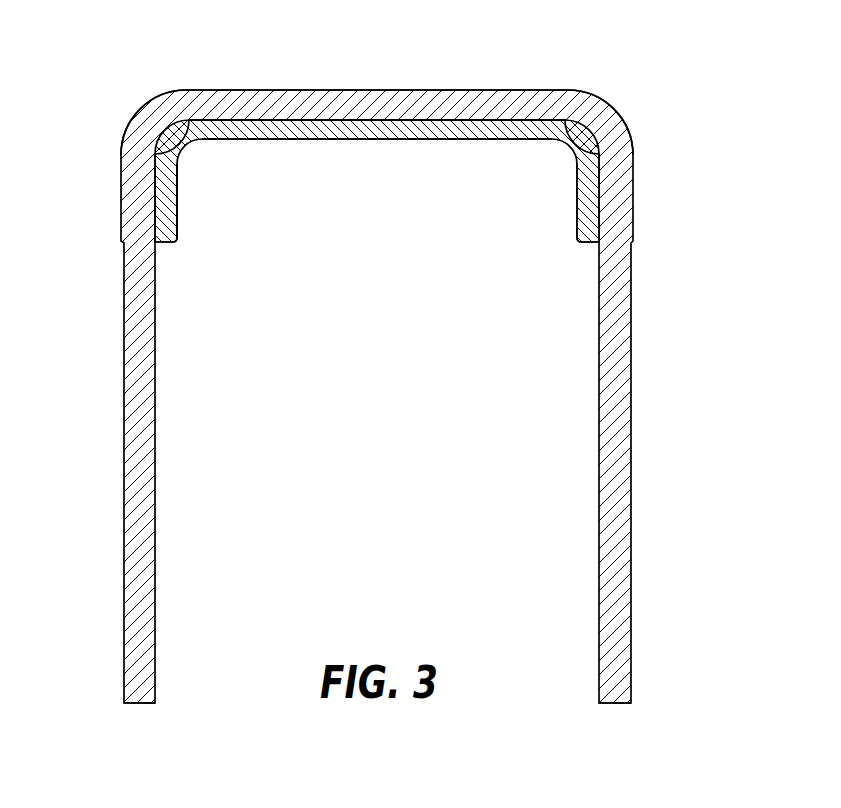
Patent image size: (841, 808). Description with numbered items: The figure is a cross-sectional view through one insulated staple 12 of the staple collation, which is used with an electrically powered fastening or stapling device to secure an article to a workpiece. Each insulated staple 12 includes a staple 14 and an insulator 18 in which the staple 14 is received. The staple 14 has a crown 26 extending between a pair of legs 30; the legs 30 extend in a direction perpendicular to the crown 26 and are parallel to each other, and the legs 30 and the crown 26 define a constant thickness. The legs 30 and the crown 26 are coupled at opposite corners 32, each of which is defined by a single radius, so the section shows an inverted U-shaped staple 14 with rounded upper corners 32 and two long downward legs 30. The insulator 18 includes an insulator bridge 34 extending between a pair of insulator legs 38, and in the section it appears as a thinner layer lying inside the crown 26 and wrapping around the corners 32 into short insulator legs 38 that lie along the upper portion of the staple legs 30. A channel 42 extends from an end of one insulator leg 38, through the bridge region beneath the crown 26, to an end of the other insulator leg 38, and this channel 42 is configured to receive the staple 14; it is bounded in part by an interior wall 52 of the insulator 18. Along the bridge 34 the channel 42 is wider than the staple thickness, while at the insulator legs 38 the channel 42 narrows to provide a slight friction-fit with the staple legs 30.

The insulated staple 12 is at (398, 367).
The staple 14 is at (630, 483).
The insulator 18 is at (260, 140).
The crown 26 is at (375, 98).
The legs 30 is at (130, 602).
The corners 32 is at (152, 118).
The insulator bridge 34 is at (425, 138).
The insulator legs 38 is at (167, 223).
The channel 42 is at (470, 117).
The interior wall 52 is at (325, 120).